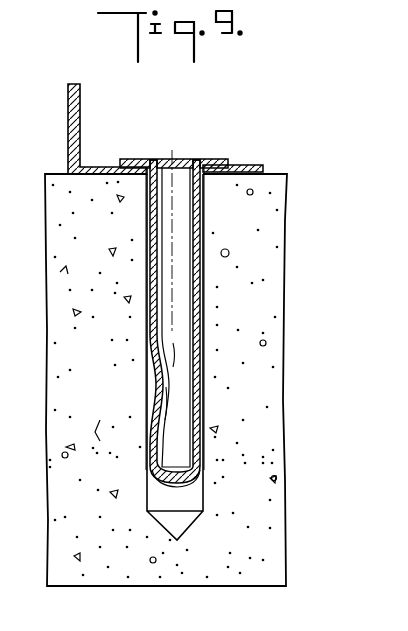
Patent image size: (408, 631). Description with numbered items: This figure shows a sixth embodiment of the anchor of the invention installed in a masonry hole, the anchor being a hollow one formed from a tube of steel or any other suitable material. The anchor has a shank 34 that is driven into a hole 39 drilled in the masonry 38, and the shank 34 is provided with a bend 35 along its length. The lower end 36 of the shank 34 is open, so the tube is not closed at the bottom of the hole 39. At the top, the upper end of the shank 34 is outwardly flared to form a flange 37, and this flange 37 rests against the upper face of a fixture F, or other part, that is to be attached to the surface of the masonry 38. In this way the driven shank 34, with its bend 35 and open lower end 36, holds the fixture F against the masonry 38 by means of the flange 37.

The shank 34 is at (198, 232).
The bend 35 is at (147, 400).
The lower end 36 is at (186, 484).
The flange 37 is at (197, 158).
The masonry 38 is at (266, 275).
The hole 39 is at (182, 518).
The fixture F is at (80, 116).